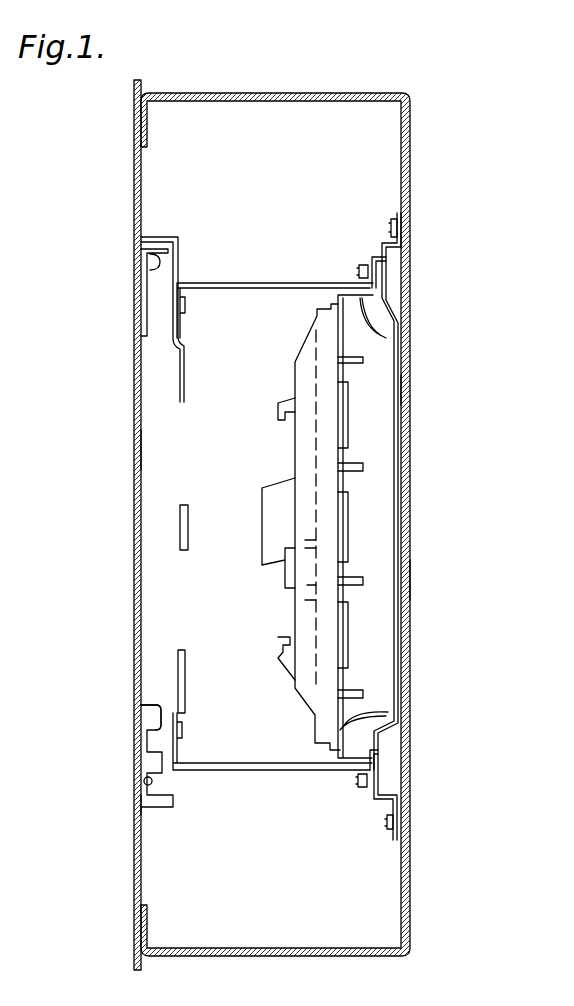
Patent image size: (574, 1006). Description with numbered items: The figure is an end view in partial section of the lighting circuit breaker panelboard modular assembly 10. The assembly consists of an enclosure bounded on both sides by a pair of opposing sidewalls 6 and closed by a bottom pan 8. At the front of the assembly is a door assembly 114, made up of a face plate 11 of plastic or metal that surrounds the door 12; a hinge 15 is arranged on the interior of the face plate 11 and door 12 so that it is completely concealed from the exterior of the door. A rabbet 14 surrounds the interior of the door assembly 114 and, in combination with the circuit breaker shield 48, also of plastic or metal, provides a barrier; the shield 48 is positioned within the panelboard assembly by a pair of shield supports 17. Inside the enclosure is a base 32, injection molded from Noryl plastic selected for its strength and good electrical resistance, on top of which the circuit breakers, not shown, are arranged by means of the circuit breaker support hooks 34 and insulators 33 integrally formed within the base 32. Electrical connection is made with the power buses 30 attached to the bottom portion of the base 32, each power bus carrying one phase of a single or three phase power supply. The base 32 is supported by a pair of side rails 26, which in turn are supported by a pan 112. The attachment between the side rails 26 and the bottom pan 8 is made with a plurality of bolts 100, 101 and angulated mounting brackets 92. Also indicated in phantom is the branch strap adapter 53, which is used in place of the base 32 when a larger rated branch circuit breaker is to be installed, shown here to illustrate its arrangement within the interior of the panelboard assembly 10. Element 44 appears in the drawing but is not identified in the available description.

The sidewalls 6 is at (335, 94).
The bottom pan 8 is at (410, 578).
The panelboard modular assembly 10 is at (532, 878).
The face plate 11 is at (135, 182).
The door 12 is at (134, 450).
The rabbet 14 is at (145, 252).
The hinge 15 is at (151, 745).
The shield supports 17 is at (258, 283).
The side rails 26 is at (378, 336).
The power buses 30 is at (350, 430).
The base 32 is at (330, 517).
The insulators 33 is at (280, 490).
The circuit breaker support hooks 34 is at (282, 400).
The upper wall bracket 44 is at (178, 238).
The circuit breaker shield 48 is at (176, 528).
The branch strap adapter 53 is at (297, 605).
The angulated mounting brackets 92 is at (387, 252).
The bolts 100 is at (374, 257).
The bolts 101 is at (397, 214).
The pan 112 is at (396, 392).
The door assembly 114 is at (130, 805).